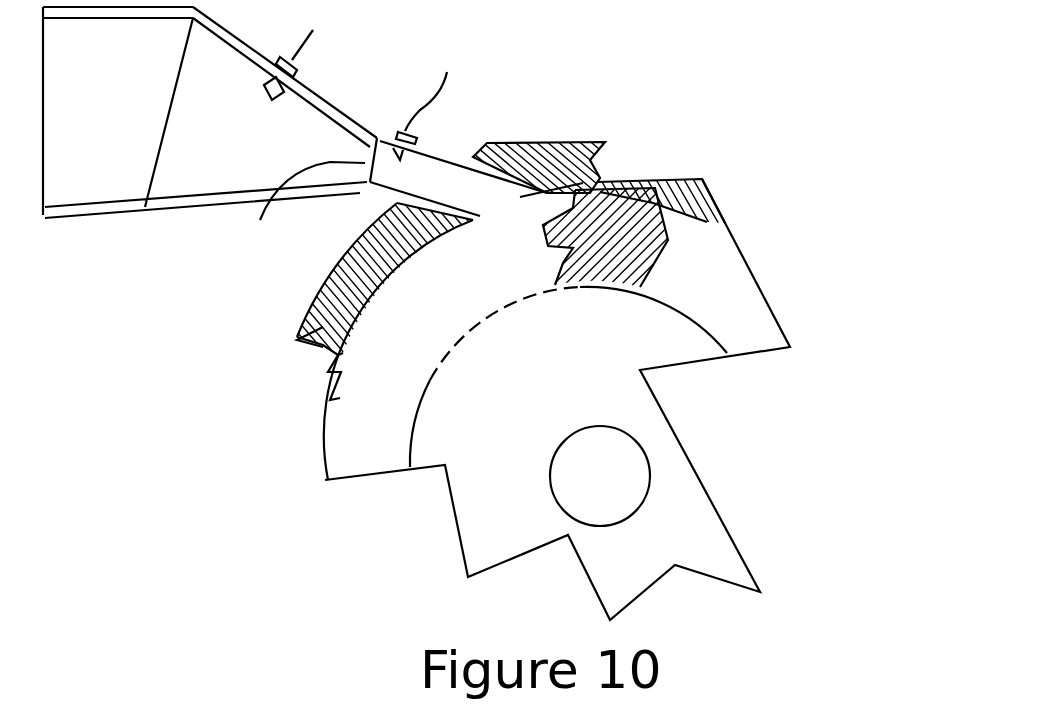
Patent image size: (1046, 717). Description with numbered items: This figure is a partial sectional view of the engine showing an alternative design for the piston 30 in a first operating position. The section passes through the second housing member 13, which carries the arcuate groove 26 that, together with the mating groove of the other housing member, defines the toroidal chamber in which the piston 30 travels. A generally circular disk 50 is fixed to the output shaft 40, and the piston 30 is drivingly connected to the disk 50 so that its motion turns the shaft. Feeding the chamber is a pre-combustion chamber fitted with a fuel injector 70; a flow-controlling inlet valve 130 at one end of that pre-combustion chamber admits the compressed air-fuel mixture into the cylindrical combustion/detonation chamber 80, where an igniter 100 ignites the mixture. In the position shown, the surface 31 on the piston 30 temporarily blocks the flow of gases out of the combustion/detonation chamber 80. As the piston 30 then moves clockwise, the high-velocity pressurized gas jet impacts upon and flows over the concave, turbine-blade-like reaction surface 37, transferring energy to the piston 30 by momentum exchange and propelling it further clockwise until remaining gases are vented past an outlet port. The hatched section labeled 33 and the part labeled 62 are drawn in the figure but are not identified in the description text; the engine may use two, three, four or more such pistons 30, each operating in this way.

The second housing member 13 is at (563, 140).
The arcuate groove 26 is at (355, 435).
The piston 30 is at (645, 232).
The surface 31 is at (640, 197).
The toothed ring sector 33 is at (363, 317).
The concave reaction surface 37 is at (583, 183).
The output shaft 40 is at (615, 472).
The disk 50 is at (487, 420).
The arm 62 is at (288, 130).
The fuel injector 70 is at (298, 70).
The combustion/detonation chamber 80 is at (432, 182).
The igniter 100 is at (420, 137).
The inlet valve 130 is at (293, 177).